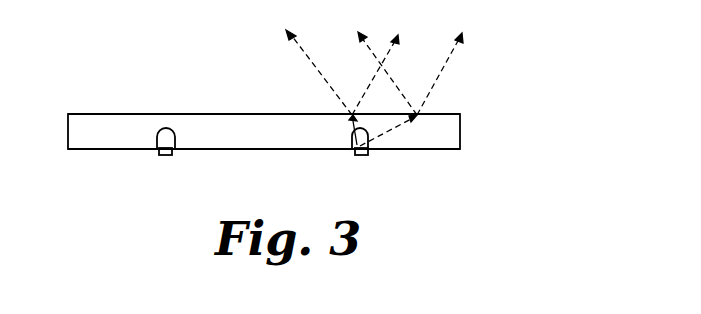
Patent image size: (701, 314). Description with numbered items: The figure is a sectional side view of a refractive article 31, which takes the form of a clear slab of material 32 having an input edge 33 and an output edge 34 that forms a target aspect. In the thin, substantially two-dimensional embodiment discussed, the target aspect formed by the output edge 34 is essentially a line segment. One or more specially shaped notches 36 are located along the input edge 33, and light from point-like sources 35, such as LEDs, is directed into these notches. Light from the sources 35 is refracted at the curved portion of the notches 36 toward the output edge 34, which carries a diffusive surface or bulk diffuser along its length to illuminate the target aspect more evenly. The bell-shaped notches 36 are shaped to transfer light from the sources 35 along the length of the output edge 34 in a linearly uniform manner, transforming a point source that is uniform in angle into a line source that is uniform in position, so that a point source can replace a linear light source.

The refractive article 31 is at (493, 67).
The clear slab of material 32 is at (457, 129).
The input edge 33 is at (438, 149).
The output edge 34 is at (228, 113).
The point-like source 35 is at (361, 155).
The notch 36 is at (353, 140).